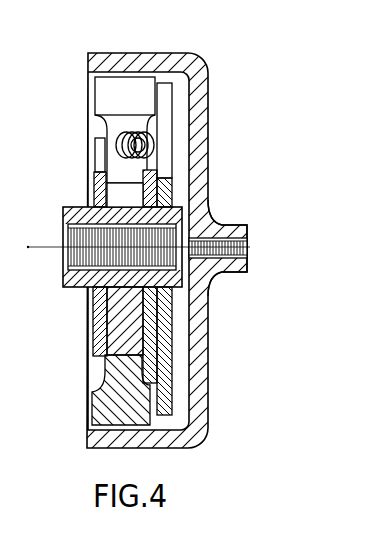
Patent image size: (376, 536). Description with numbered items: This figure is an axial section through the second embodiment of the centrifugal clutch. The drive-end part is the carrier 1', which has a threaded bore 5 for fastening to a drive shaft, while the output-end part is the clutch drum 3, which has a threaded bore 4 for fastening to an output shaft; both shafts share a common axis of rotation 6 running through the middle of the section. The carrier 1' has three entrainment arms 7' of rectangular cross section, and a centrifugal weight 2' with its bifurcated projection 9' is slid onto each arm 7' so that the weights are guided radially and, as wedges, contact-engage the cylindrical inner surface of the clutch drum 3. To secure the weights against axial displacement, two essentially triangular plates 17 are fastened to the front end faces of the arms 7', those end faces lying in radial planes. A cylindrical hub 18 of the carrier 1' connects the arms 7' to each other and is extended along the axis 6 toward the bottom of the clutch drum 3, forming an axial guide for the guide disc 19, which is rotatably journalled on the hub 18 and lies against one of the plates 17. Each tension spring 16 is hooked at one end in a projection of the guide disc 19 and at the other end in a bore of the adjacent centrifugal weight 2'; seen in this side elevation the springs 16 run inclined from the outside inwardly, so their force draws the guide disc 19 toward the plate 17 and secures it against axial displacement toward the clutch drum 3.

The carrier 1' is at (103, 247).
The centrifugal weight 2' is at (123, 213).
The clutch drum 3 is at (198, 406).
The threaded bore 4 is at (226, 258).
The threaded bore 5 is at (68, 230).
The axis of rotation 6 is at (50, 247).
The arm 7' is at (88, 265).
The bifurcated projection 9' is at (201, 192).
The tension spring 16 is at (118, 145).
The plate 17 is at (100, 307).
The hub 18 is at (190, 214).
The guide disc 19 is at (168, 132).